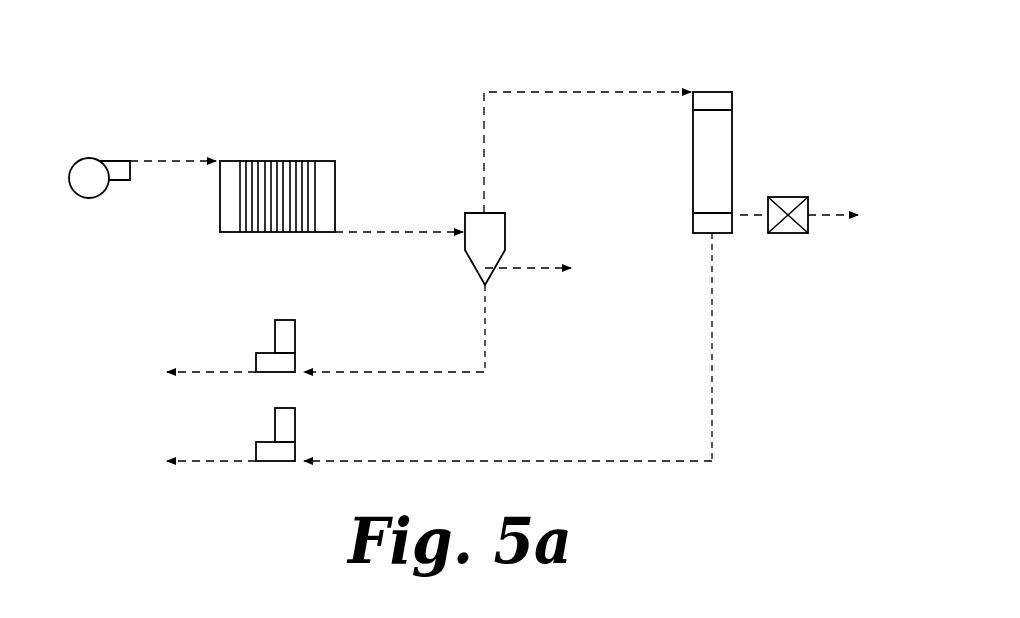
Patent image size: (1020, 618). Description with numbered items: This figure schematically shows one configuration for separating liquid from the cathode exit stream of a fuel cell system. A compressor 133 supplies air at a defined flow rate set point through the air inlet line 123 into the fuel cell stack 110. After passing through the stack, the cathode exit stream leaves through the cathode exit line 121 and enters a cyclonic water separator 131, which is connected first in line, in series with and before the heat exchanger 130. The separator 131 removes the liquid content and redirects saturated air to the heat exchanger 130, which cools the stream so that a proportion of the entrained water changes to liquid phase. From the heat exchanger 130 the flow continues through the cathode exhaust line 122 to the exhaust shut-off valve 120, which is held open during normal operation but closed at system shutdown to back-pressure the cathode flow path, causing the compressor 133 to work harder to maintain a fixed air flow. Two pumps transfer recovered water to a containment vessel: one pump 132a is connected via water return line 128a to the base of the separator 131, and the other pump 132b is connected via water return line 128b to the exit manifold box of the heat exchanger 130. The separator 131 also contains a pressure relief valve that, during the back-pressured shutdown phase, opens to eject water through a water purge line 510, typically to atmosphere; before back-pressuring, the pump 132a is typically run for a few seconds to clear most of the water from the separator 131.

The compressor 133 is at (97, 161).
The air inlet line 123 is at (182, 158).
The fuel cell stack 110 is at (287, 161).
The cathode exit line 121 is at (390, 230).
The water separator 131 is at (505, 220).
The water purge line 510 is at (533, 268).
The heat exchanger 130 is at (732, 132).
The cathode exhaust line 122 is at (745, 218).
The exhaust shut-off valve 120 is at (795, 197).
The pump 132a is at (295, 335).
The water return line 128a is at (388, 372).
The pump 132b is at (295, 422).
The water return line 128b is at (388, 461).